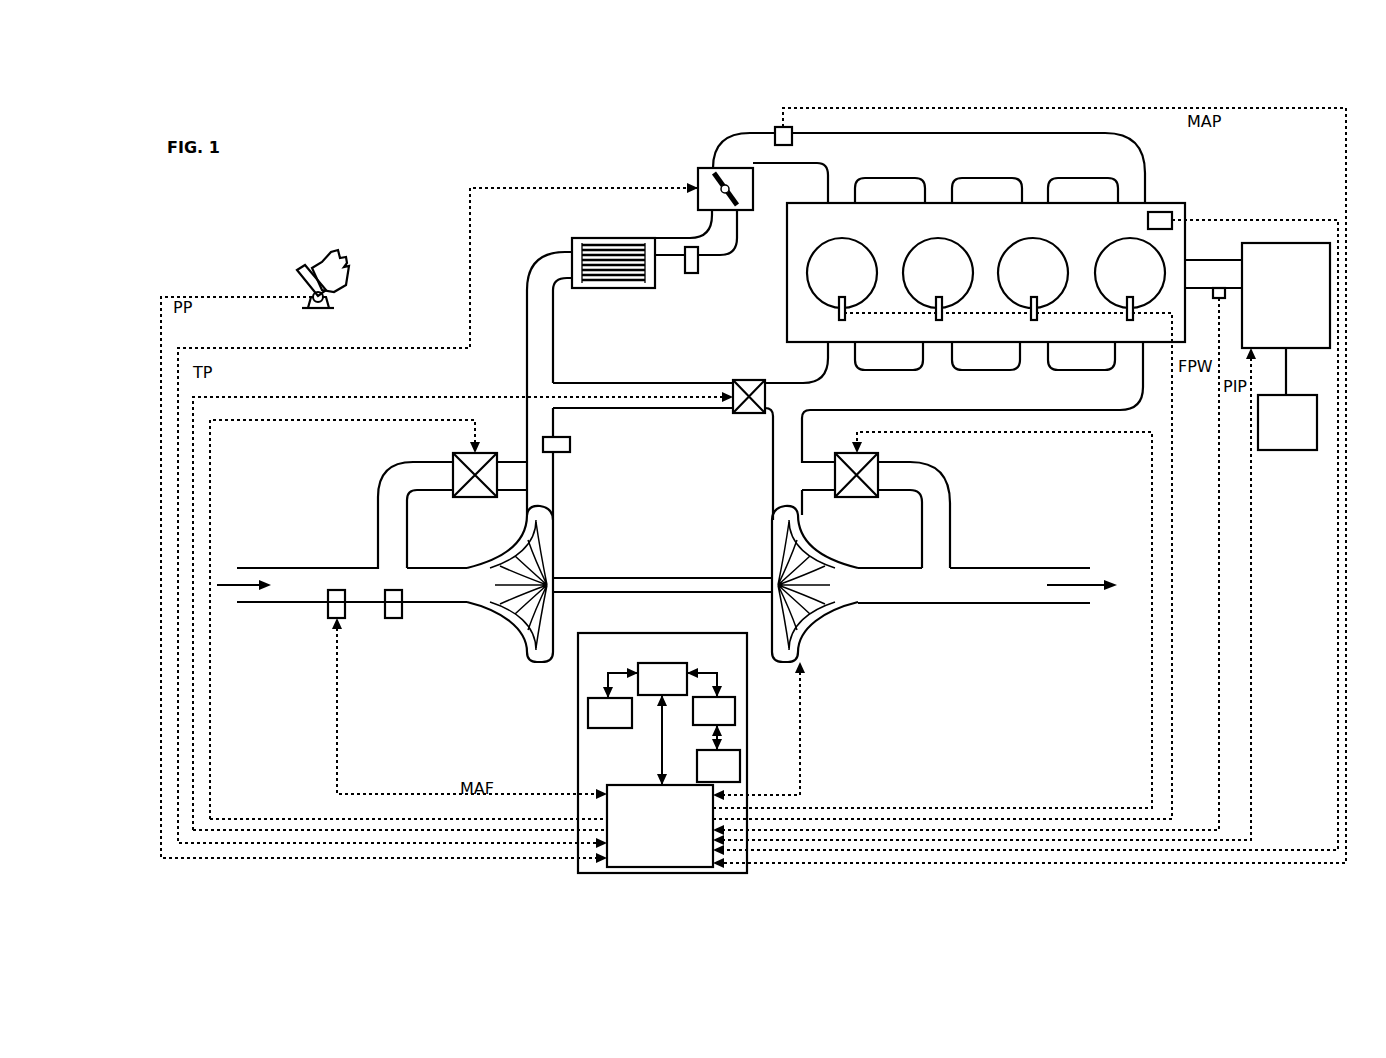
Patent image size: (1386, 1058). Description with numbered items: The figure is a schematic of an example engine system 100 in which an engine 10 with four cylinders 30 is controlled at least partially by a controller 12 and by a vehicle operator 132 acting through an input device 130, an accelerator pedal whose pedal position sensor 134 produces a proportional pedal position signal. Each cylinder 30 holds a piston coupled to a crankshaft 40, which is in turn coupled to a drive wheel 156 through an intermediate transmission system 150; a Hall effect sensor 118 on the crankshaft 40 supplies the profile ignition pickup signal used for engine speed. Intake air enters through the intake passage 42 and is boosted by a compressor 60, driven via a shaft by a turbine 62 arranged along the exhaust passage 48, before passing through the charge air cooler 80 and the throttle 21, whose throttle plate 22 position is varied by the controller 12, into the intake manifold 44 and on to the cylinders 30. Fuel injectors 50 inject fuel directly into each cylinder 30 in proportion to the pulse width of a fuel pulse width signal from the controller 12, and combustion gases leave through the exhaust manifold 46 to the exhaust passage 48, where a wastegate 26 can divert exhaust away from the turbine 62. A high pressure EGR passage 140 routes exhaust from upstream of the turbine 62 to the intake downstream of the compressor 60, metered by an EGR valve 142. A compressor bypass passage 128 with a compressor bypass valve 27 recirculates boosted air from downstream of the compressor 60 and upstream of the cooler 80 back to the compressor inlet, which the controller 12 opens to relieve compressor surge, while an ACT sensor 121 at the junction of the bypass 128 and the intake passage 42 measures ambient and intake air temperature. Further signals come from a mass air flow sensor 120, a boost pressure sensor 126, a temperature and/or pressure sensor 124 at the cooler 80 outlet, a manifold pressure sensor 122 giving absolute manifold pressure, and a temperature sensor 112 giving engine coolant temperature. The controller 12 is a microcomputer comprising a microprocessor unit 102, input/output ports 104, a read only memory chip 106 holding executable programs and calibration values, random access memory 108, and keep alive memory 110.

The engine system 100 is at (408, 198).
The input device 130 is at (298, 278).
The vehicle operator 132 is at (342, 264).
The pedal position sensor 134 is at (328, 298).
The intake passage 42 is at (294, 595).
The compressor bypass passage 128 is at (378, 500).
The compressor bypass valve 27 is at (450, 462).
The mass air flow sensor 120 is at (346, 610).
The ACT sensor 121 is at (403, 610).
The compressor 60 is at (518, 620).
The boost pressure sensor 126 is at (573, 445).
The charge air cooler 80 is at (575, 238).
The temperature and/or pressure sensor 124 is at (697, 275).
The throttle 21 is at (708, 168).
The throttle plate 22 is at (740, 200).
The intake manifold 44 is at (872, 166).
The manifold pressure sensor 122 is at (773, 130).
The engine 10 is at (1080, 233).
The cylinder 30 is at (852, 282).
The fuel injector 50 is at (839, 318).
The temperature sensor 112 is at (1165, 212).
The exhaust manifold 46 is at (847, 403).
The EGR passage 140 is at (645, 383).
The EGR valve 142 is at (752, 380).
The wastegate 26 is at (878, 463).
The turbine 62 is at (812, 540).
The exhaust passage 48 is at (915, 595).
The crankshaft 40 is at (1205, 258).
The transmission system 150 is at (1300, 280).
The drive wheel 156 is at (1300, 430).
The Hall effect sensor 118 is at (1216, 300).
The controller 12 is at (620, 768).
The microprocessor unit 102 is at (632, 670).
The read only memory chip 106 is at (588, 722).
The random access memory 108 is at (735, 698).
The keep alive memory 110 is at (740, 752).
The input/output ports 104 is at (699, 861).